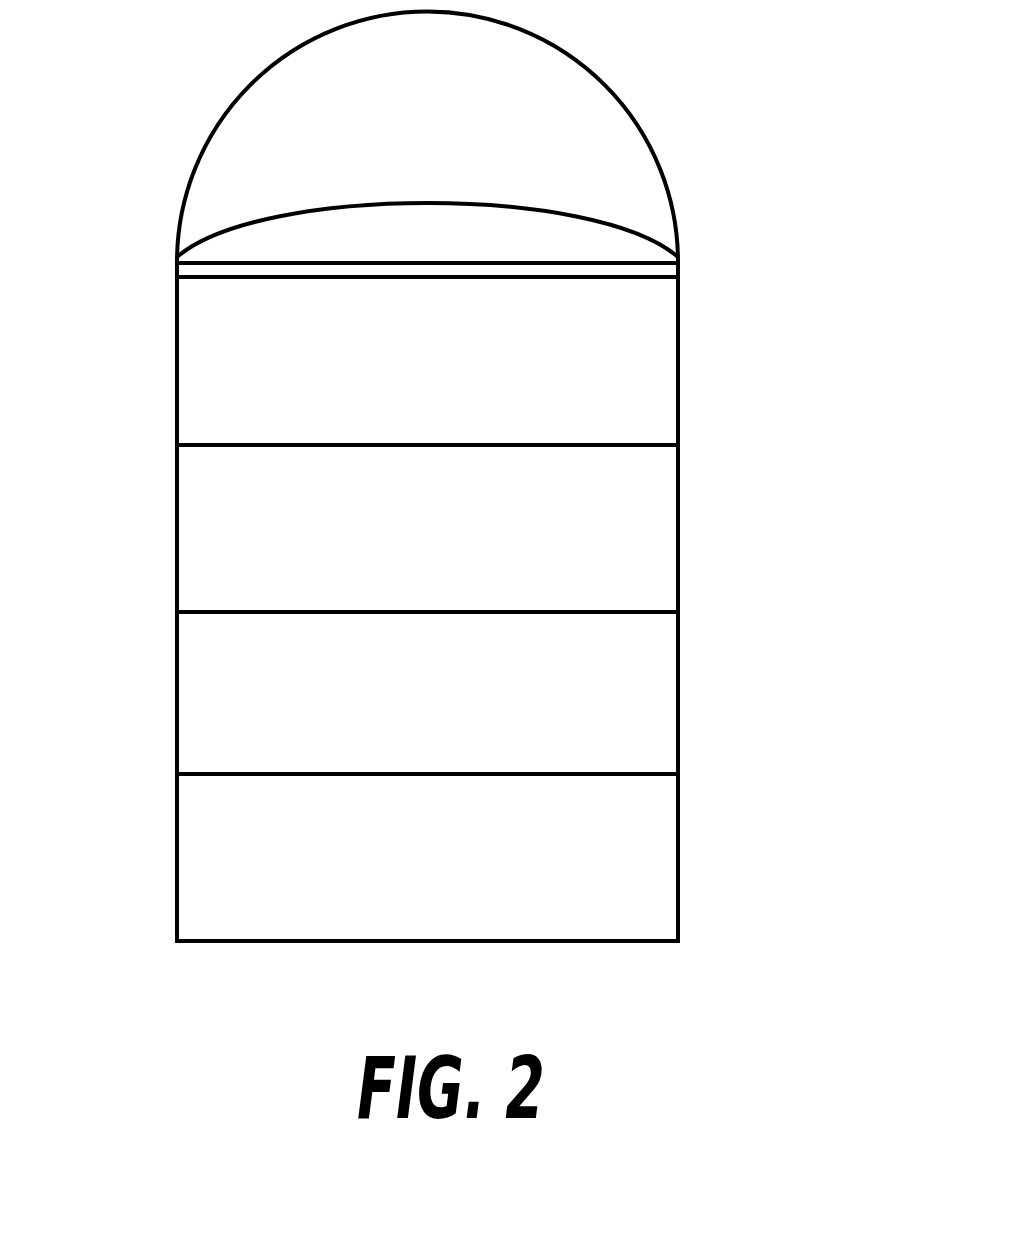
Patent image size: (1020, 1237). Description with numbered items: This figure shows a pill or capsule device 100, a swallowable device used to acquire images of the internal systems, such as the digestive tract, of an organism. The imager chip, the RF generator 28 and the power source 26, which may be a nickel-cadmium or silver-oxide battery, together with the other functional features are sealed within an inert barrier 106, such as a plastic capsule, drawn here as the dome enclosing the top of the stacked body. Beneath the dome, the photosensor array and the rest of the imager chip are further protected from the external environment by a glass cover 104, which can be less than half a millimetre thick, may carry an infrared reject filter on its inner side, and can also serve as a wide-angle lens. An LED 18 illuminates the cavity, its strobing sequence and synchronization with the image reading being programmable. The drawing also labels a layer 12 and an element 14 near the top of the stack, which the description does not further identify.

The pill or capsule device 100 is at (752, 280).
The inert barrier 106 is at (621, 100).
The glass cover 104 is at (290, 233).
The LED 18 is at (205, 208).
The light emitting layer 14 is at (455, 220).
The substrate layer 12 is at (464, 383).
The RF generator 28 is at (462, 545).
The power source 26 is at (462, 707).